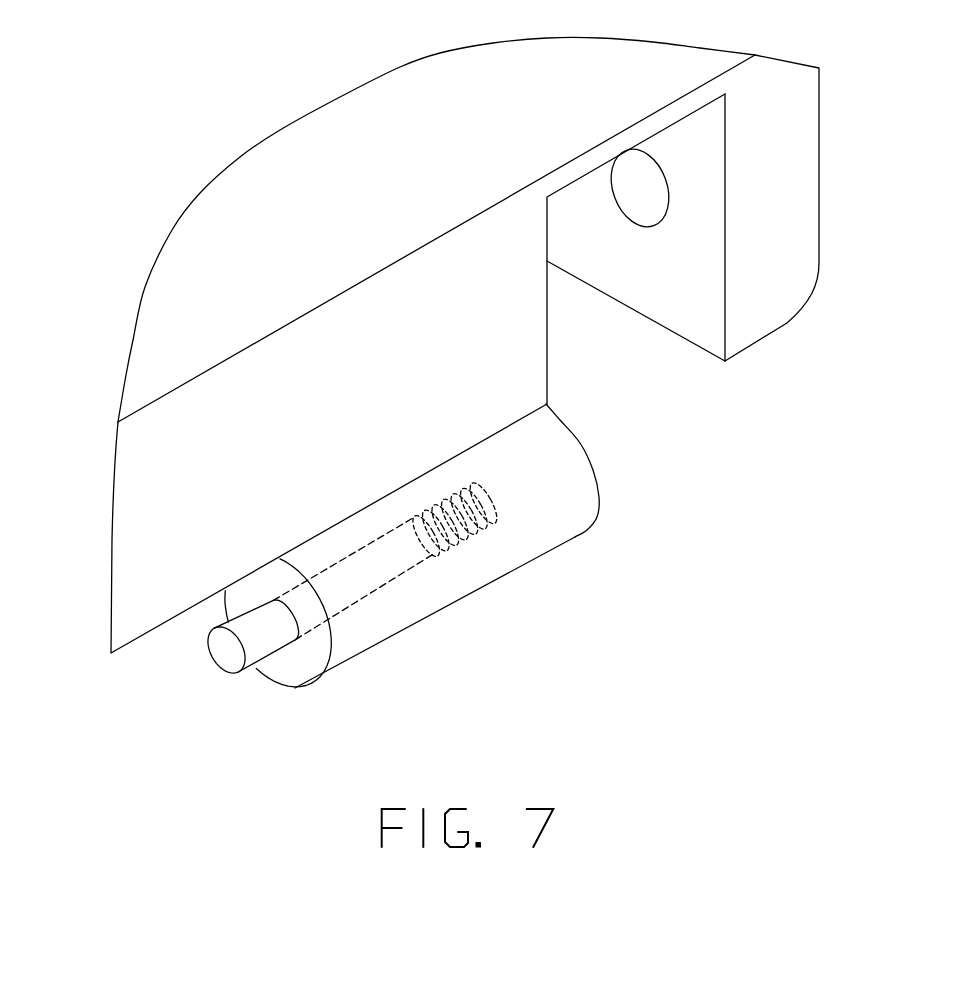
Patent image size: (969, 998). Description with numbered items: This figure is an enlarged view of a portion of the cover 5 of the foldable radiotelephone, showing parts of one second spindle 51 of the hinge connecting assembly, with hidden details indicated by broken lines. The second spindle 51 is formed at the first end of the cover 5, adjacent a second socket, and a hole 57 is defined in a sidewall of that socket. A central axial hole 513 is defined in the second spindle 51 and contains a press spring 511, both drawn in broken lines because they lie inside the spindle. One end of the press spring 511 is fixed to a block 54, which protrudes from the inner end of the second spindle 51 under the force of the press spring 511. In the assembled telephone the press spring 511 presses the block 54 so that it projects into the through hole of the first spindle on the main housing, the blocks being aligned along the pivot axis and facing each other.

The cover 5 is at (245, 108).
The second spindle 51 is at (550, 497).
The block 54 is at (228, 653).
The hole 57 is at (585, 302).
The press spring 511 is at (445, 556).
The central axial hole 513 is at (428, 512).